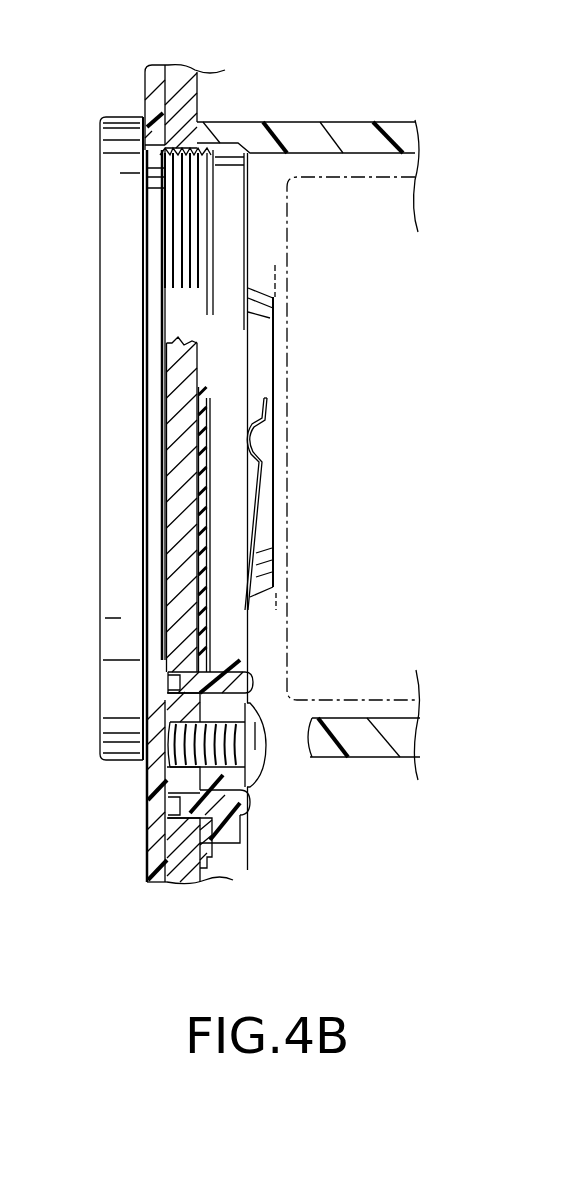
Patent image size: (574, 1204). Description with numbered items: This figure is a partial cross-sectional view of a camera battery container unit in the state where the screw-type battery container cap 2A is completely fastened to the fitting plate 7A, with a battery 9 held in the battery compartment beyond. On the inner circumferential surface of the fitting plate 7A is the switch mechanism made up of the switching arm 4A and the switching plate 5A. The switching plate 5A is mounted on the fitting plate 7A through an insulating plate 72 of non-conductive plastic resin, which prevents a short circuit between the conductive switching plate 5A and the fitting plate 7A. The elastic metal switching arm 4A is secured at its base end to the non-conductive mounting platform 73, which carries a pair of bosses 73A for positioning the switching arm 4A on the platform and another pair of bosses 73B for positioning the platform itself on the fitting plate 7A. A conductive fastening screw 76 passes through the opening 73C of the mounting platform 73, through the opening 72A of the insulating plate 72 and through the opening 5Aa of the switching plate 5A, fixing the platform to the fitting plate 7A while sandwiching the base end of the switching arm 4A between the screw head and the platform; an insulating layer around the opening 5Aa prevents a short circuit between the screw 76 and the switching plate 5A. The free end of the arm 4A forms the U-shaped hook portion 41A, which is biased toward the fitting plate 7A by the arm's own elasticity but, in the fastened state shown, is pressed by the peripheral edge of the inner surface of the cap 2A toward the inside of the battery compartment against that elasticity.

The battery container cap 2A is at (84, 580).
The switching arm 4A is at (258, 503).
The hook portion 41A is at (253, 450).
The switching plate 5A is at (210, 418).
The opening of switching plate 5Aa is at (215, 850).
The fitting plate 7A is at (182, 870).
The battery 9 is at (392, 706).
The insulating plate 72 is at (200, 483).
The opening of insulating plate 72A is at (190, 778).
The mounting platform 73 is at (233, 658).
The boss 73A is at (253, 682).
The boss 73B is at (170, 676).
The opening 73C is at (232, 835).
The fastening screw 76 is at (267, 753).